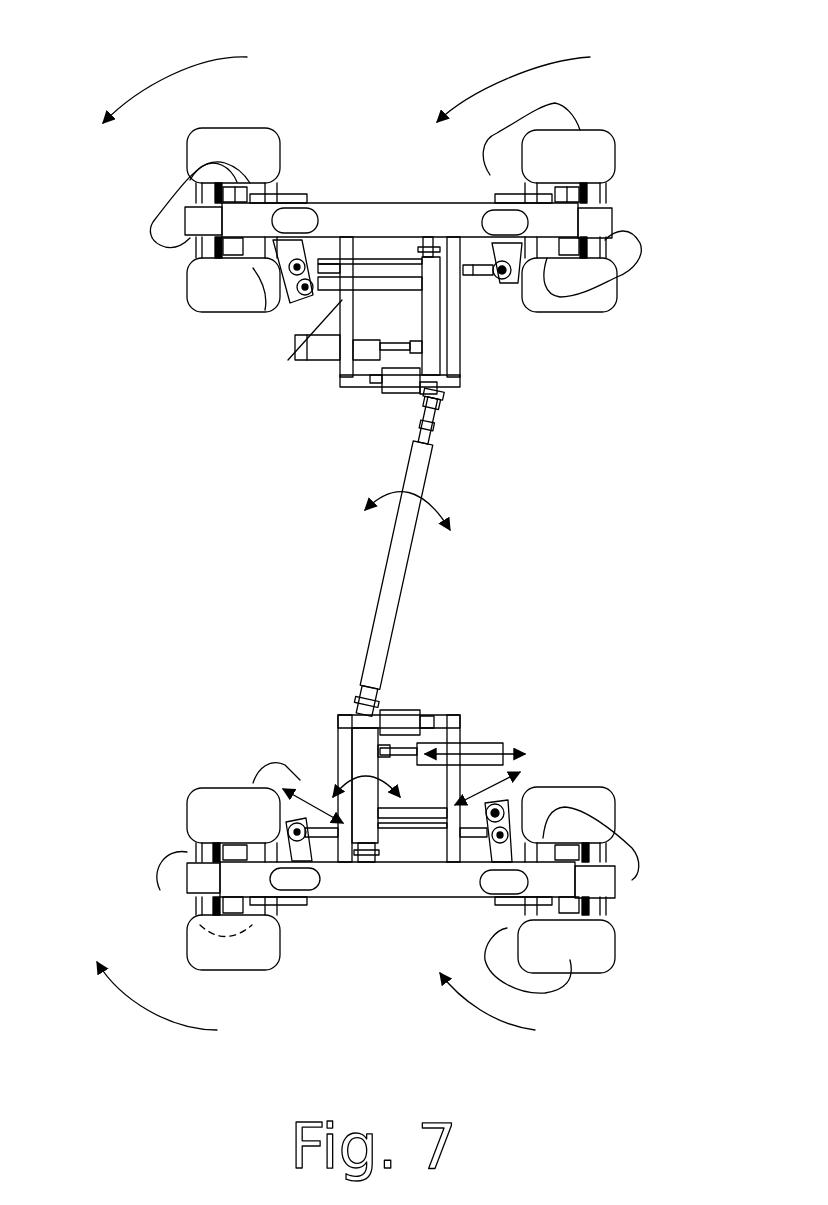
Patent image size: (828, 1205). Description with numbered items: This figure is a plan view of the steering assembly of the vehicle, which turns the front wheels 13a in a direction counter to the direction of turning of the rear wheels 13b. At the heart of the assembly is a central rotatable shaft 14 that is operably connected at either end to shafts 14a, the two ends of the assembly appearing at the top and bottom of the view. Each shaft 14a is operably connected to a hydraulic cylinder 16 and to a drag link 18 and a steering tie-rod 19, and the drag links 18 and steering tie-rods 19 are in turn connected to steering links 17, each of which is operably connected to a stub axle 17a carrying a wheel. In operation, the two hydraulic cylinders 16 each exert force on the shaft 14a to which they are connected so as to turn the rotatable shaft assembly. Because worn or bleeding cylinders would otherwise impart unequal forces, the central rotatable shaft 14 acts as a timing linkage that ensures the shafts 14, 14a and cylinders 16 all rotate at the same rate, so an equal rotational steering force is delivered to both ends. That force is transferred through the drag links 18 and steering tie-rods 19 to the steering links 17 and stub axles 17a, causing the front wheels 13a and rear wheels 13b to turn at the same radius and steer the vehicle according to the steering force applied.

The front wheels 13a is at (590, 947).
The rear wheels 13b is at (198, 147).
The central rotatable shaft 14 is at (432, 452).
The shafts 14a is at (433, 317).
The hydraulic cylinders 16 is at (297, 360).
The steering links 17 is at (260, 312).
The stub axle 17a is at (603, 221).
The drag links 18 is at (316, 362).
The steering tie-rods 19 is at (400, 260).